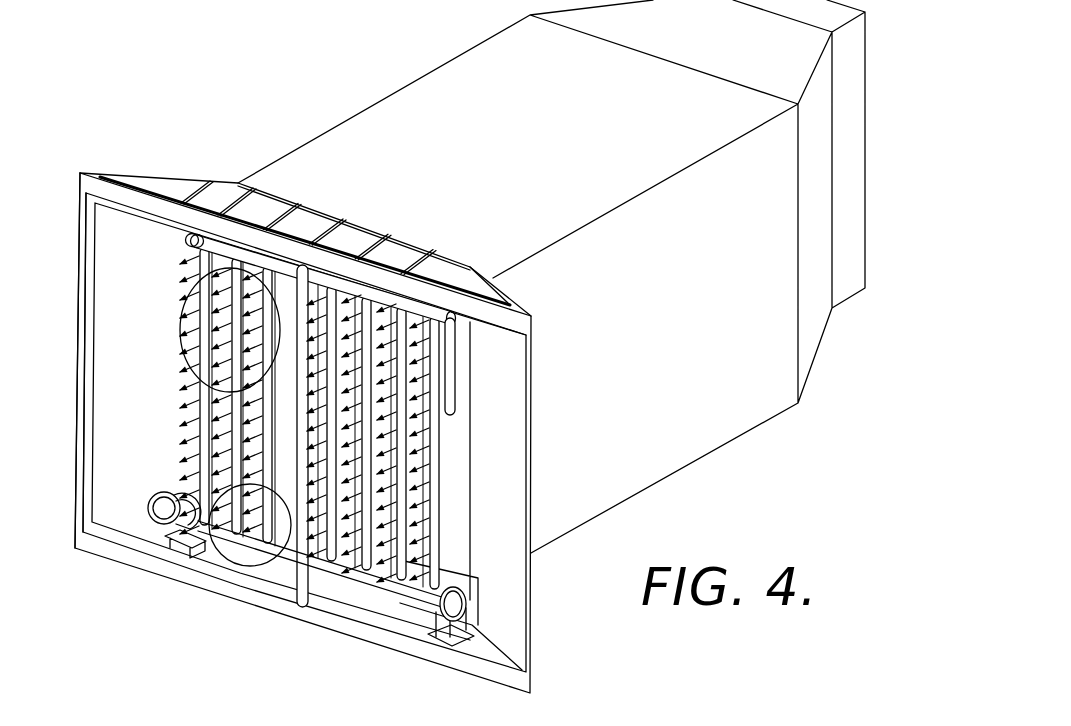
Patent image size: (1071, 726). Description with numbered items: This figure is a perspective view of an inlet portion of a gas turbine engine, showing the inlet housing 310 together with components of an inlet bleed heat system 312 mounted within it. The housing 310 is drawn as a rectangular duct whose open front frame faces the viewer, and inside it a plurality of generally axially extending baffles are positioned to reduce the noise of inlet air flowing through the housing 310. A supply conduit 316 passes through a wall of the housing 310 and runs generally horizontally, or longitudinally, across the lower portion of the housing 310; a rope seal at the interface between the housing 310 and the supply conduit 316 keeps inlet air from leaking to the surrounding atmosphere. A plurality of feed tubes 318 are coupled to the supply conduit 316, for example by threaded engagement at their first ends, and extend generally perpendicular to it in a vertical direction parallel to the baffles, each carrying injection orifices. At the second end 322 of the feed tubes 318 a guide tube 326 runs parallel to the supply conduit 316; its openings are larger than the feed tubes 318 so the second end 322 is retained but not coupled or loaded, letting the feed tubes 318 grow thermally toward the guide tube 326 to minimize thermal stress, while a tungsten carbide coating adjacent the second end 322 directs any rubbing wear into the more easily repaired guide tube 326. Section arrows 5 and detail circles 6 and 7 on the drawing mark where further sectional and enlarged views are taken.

The housing 310 is at (140, 409).
The inlet bleed heat system 312 is at (113, 447).
The supply conduit 316 is at (285, 557).
The feed tubes 318 is at (203, 545).
The second end 322 is at (186, 243).
The guide tube 326 is at (223, 247).
The section view indicator FIG. 5 is at (175, 364).
The detail view circle FIG. 6 is at (186, 282).
The detail view circle FIG. 7 is at (223, 550).